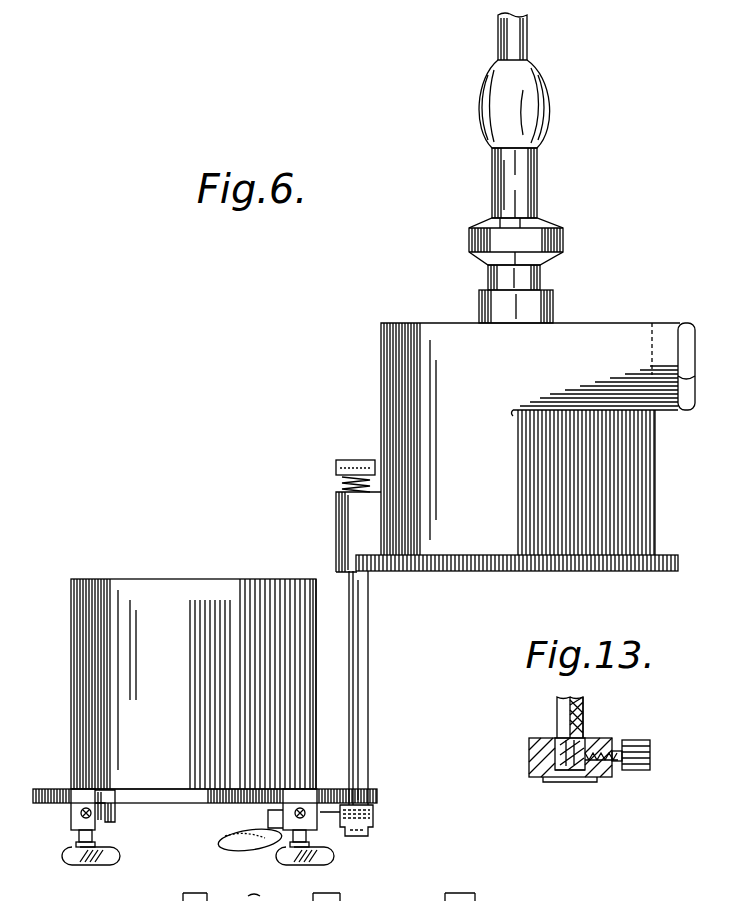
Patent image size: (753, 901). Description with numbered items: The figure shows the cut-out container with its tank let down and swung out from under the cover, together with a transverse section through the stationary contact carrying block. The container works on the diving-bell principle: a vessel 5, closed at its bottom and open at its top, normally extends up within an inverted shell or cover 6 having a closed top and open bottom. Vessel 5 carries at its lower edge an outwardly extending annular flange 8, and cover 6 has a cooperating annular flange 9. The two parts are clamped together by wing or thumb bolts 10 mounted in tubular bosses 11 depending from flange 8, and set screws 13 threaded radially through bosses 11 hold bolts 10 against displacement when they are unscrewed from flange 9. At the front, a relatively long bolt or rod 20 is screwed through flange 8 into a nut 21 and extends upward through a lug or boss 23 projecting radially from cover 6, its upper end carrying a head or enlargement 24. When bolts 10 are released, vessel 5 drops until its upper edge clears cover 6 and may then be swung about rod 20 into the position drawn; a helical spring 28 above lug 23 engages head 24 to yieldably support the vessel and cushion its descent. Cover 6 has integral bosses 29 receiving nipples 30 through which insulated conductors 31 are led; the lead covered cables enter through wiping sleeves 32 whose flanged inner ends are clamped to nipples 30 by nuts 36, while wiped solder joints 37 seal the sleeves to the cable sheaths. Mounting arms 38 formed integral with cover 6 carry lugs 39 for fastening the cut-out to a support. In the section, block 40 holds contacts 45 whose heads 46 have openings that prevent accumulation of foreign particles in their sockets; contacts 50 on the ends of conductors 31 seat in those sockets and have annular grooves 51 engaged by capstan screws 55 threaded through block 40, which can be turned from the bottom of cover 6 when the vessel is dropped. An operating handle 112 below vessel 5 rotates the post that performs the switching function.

In FIG. 6, the vessel 5 is at (71, 628).
In FIG. 6, the inverted shell or cover 6 is at (381, 345).
In FIG. 6, the annular flange 8 is at (208, 795).
In FIG. 6, the annular flange 9 is at (572, 571).
In FIG. 6, the wing or thumb bolts 10 is at (91, 866).
In FIG. 6, the tubular bosses 11 is at (100, 822).
In FIG. 6, the set screws 13 is at (80, 814).
In FIG. 6, the bolt or rod 20 is at (362, 630).
In FIG. 6, the nut 21 is at (373, 818).
In FIG. 6, the lug or boss 23 is at (336, 515).
In FIG. 6, the head or enlargement 24 is at (350, 460).
In FIG. 6, the helical spring 28 is at (340, 485).
In FIG. 6, the bosses 29 is at (482, 300).
In FIG. 6, the nipples 30 is at (540, 276).
In FIG. 6, the insulated conductors 31 is at (252, 895).
In FIG. 13, the insulated conductors 31 is at (580, 698).
In FIG. 6, the wiping sleeves 32 is at (532, 160).
In FIG. 6, the nuts 36 is at (552, 240).
In FIG. 6, the wiped solder joints 37 is at (536, 90).
In FIG. 6, the mounting arms 38 is at (662, 330).
In FIG. 6, the lugs 39 is at (692, 363).
In FIG. 13, the block 40 is at (529, 750).
In FIG. 13, the contacts 45 is at (557, 740).
In FIG. 13, the heads 46 is at (553, 780).
In FIG. 13, the contacts 50 is at (590, 736).
In FIG. 13, the annular grooves 51 is at (534, 776).
In FIG. 13, the capstan screws 55 is at (636, 742).
In FIG. 6, the operating handle 112 is at (233, 846).